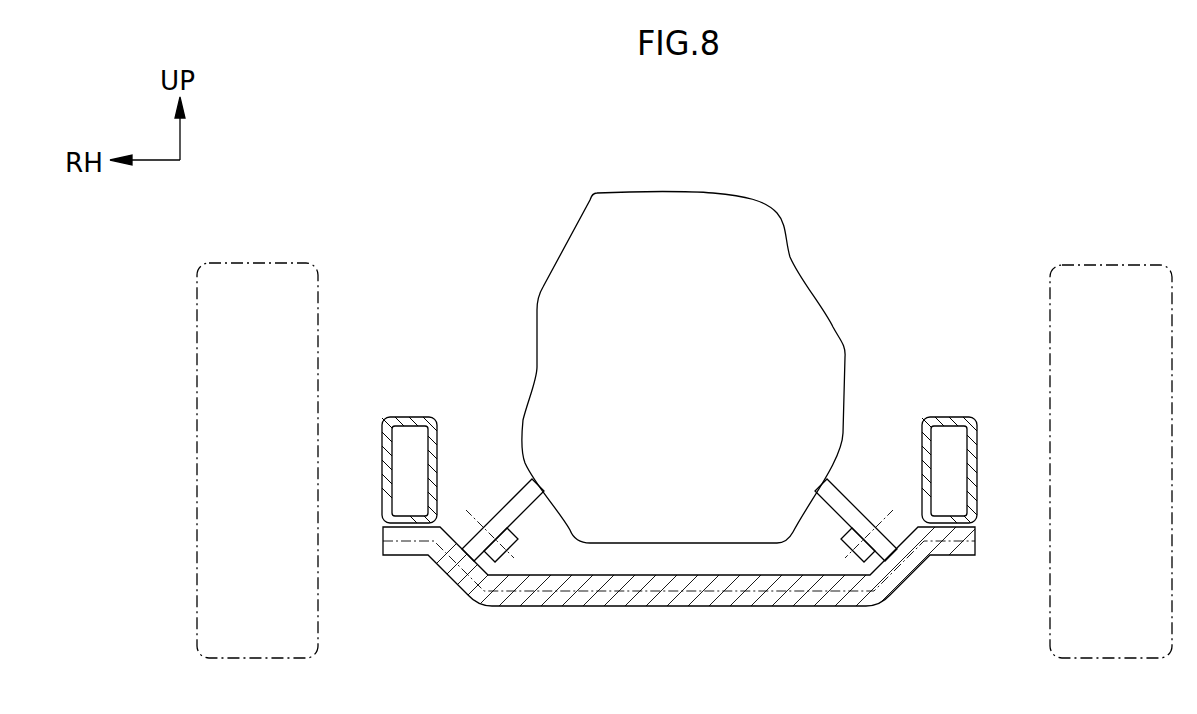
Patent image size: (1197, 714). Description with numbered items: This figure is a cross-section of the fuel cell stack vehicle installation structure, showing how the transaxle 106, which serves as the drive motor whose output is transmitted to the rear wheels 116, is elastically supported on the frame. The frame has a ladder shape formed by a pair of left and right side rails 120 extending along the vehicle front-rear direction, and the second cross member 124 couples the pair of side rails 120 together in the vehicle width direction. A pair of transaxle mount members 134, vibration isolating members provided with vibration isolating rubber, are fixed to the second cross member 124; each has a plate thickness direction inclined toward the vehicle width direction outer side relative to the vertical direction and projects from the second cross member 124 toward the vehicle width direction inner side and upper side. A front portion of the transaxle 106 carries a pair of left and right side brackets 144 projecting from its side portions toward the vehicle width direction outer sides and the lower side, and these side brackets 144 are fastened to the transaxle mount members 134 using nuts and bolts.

The transaxle 106 is at (795, 262).
The rear wheels 116 is at (257, 263).
The side rails 120 is at (410, 417).
The second cross member 124 is at (673, 607).
The transaxle mount members 134 is at (498, 566).
The side brackets 144 is at (512, 498).